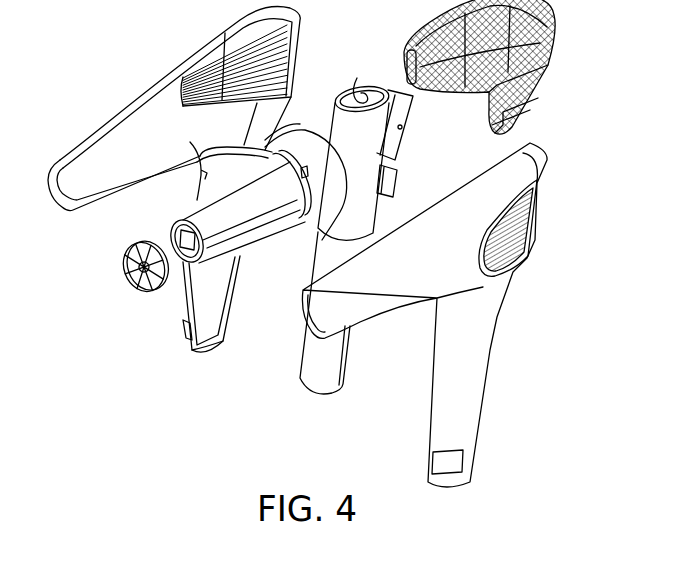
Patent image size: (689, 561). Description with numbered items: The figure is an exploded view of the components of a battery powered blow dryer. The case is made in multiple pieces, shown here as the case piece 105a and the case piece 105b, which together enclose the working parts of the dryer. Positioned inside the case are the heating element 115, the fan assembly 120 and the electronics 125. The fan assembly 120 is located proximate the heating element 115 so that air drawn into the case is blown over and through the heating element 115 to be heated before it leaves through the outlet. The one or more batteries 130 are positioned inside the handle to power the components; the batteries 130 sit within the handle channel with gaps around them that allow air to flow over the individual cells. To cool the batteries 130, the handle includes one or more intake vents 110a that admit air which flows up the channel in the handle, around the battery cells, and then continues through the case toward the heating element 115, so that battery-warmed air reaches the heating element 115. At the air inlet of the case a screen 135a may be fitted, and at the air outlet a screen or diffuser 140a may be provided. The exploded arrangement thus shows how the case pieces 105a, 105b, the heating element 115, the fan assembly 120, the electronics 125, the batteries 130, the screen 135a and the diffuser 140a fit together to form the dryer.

The case piece 105a is at (98, 122).
The case piece 105b is at (403, 305).
The intake vent 110a is at (183, 331).
The heating element 115 is at (185, 212).
The fan assembly 120 is at (298, 130).
The electronics 125 is at (396, 80).
The batteries 130 is at (300, 366).
The screen 135a is at (553, 20).
The screen or diffuser 140a is at (127, 283).